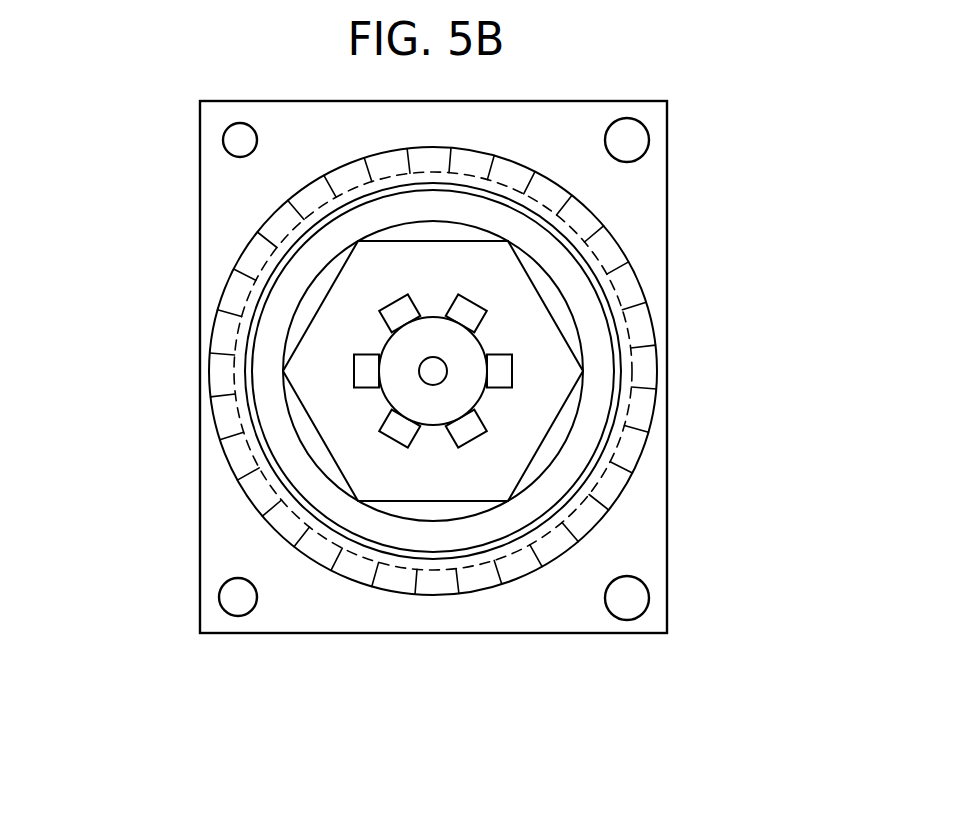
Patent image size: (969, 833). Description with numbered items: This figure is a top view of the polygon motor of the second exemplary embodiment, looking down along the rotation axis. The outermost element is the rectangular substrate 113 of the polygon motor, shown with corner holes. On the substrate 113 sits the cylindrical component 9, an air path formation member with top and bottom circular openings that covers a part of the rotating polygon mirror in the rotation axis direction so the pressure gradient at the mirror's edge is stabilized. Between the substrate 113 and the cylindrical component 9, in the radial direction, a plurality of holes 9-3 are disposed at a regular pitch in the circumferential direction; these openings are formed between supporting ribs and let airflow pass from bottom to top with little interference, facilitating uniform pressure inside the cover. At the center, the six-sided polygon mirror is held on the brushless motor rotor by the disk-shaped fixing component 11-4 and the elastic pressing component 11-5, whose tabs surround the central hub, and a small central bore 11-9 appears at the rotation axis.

The substrate 113 is at (225, 218).
The cylindrical component 9 is at (263, 457).
The holes 9-3 is at (647, 368).
The center hole 11-9 is at (432, 370).
The disk-shaped fixing component 11-4 is at (438, 406).
The elastic pressing component 11-5 is at (502, 388).